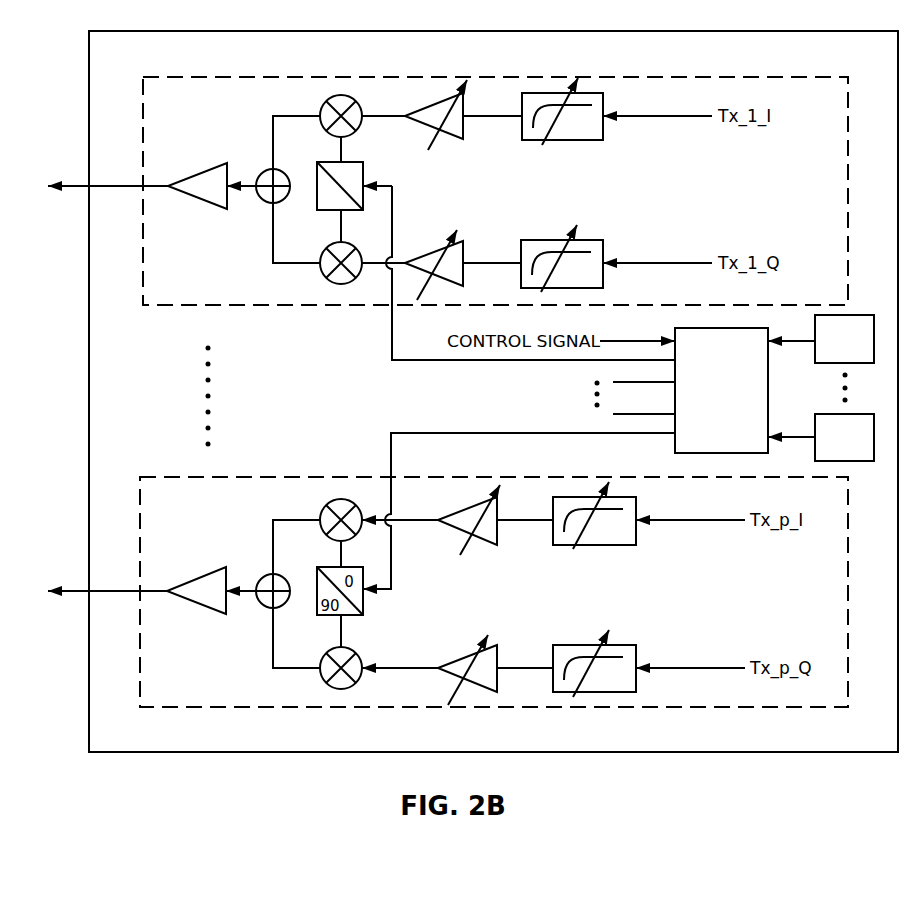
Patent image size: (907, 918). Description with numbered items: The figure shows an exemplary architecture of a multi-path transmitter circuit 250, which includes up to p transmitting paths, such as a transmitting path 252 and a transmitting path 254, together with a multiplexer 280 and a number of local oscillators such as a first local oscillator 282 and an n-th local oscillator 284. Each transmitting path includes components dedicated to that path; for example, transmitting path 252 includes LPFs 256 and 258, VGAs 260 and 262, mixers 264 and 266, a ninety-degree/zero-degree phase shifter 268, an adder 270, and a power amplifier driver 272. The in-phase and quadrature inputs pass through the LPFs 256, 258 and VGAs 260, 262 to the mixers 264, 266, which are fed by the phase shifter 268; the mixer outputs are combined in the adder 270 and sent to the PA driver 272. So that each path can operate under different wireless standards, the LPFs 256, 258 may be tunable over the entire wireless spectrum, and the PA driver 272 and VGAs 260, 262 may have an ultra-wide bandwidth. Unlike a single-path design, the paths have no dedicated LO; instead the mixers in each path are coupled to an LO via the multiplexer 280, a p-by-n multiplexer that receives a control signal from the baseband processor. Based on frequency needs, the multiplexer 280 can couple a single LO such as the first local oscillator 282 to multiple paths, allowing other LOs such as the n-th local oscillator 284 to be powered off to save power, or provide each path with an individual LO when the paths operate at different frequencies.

The multi-path transmitter circuit 250 is at (436, 783).
The transmitting path 252 is at (160, 75).
The transmitting path 254 is at (142, 477).
The LPF 256 is at (567, 140).
The LPF 258 is at (553, 240).
The VGA 260 is at (430, 138).
The VGA 262 is at (463, 243).
The mixer 264 is at (323, 102).
The mixer 266 is at (323, 278).
The 90°/0° phase shifter 268 is at (317, 195).
The adder 270 is at (260, 197).
The power amplifier (PA) driver 272 is at (193, 173).
The multiplexer 280 is at (721, 390).
The LO_1 282 is at (844, 339).
The LO_n 284 is at (844, 437).